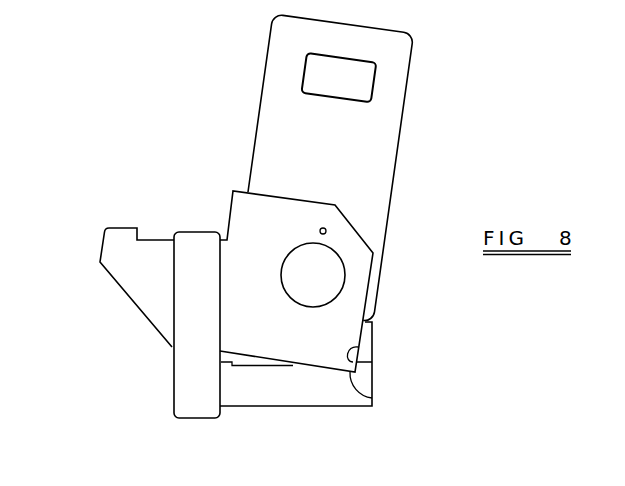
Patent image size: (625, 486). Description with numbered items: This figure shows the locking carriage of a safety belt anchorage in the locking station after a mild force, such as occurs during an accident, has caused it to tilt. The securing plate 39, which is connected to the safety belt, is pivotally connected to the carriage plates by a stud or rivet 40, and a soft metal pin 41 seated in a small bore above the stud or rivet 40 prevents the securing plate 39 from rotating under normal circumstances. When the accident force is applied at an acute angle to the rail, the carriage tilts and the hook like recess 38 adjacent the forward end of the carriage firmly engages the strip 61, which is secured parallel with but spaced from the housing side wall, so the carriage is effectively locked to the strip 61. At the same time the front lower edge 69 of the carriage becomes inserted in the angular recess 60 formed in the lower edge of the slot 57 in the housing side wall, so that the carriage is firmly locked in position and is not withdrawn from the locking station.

The hook like recess 38 is at (120, 233).
The securing plate 39 is at (397, 93).
The stud or rivet 40 is at (340, 280).
The soft metal pin 41 is at (326, 229).
The slot 57 is at (252, 362).
The angular recess 60 is at (372, 398).
The strip 61 is at (195, 235).
The front lower edge 69 is at (352, 352).